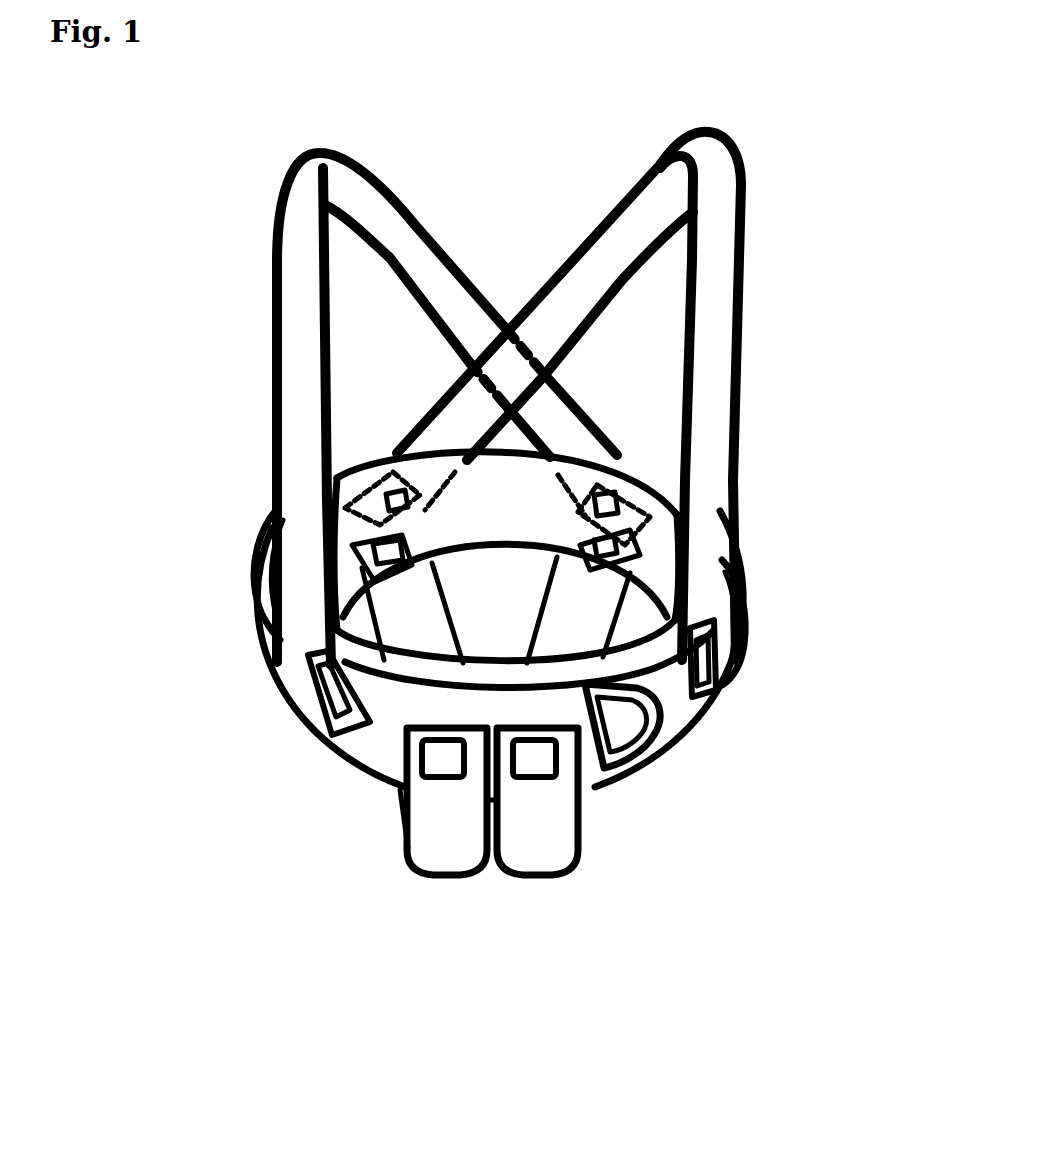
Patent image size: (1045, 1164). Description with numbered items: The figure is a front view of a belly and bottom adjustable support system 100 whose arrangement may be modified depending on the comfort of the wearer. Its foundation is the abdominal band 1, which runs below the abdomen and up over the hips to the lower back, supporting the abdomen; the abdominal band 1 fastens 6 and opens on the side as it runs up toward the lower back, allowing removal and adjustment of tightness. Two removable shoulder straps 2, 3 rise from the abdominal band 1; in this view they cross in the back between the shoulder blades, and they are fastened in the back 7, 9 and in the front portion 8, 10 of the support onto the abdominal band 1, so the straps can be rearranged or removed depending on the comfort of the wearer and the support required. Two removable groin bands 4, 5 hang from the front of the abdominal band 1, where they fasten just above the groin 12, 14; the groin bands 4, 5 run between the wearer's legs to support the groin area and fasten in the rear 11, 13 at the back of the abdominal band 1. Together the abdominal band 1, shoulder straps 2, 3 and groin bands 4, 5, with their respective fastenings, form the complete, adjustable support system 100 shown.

The support system 100 is at (920, 992).
The abdominal band 1 is at (303, 709).
The shoulder strap 2 is at (717, 345).
The shoulder strap 3 is at (297, 346).
The groin band 4 is at (648, 835).
The groin band 5 is at (307, 801).
The abdominal band fastener 6 is at (623, 730).
The back shoulder strap fastening 7 is at (383, 500).
The front shoulder strap fastening 8 is at (742, 657).
The back shoulder strap fastening 9 is at (627, 507).
The front shoulder strap fastening 10 is at (303, 677).
The rear groin band fastening 11 is at (623, 552).
The front groin band fastening 12 is at (553, 768).
The rear groin band fastening 13 is at (380, 562).
The front groin band fastening 14 is at (420, 752).